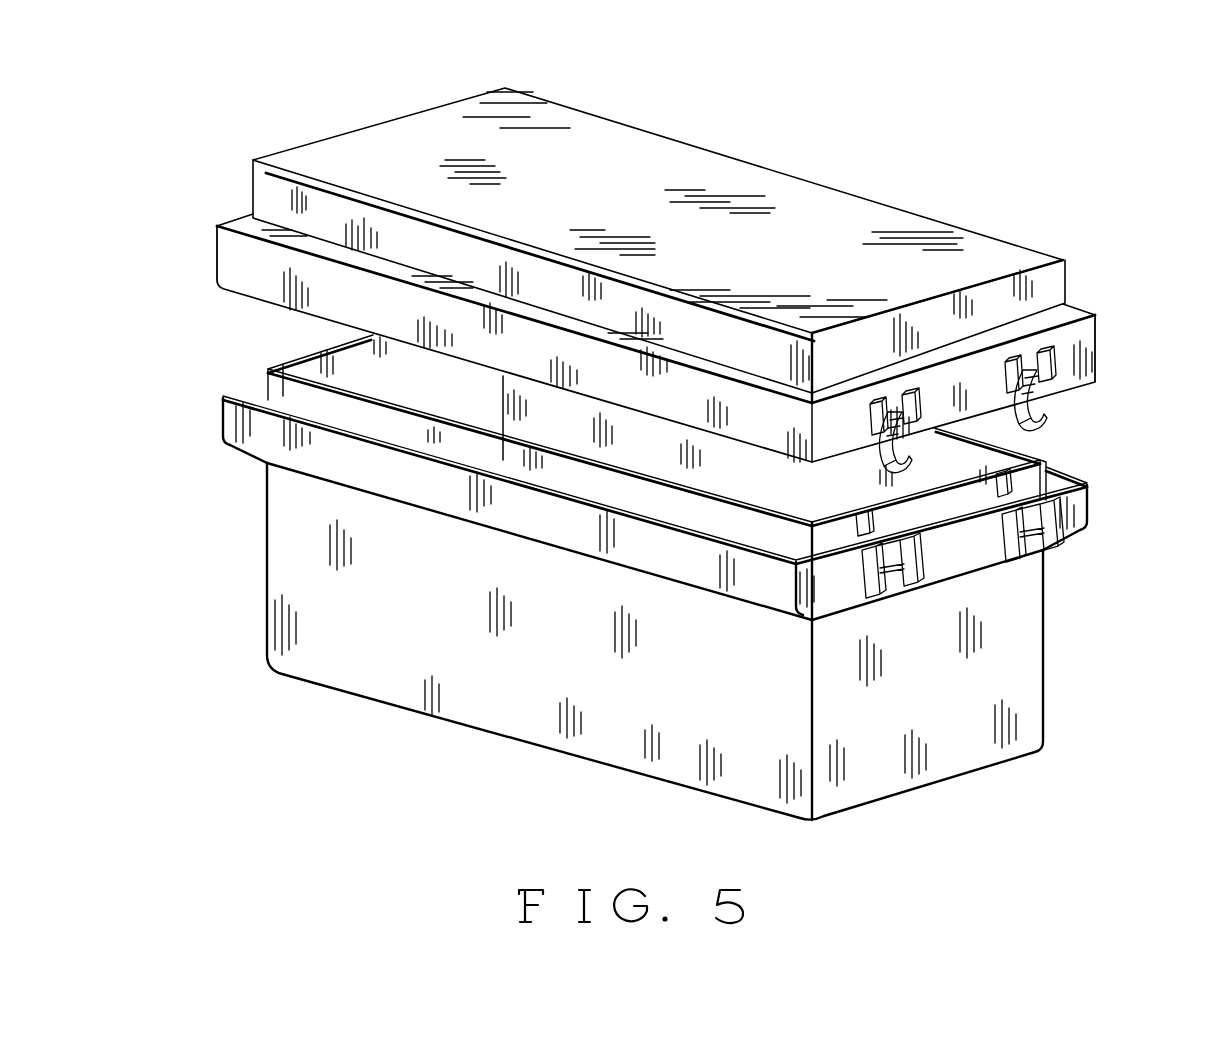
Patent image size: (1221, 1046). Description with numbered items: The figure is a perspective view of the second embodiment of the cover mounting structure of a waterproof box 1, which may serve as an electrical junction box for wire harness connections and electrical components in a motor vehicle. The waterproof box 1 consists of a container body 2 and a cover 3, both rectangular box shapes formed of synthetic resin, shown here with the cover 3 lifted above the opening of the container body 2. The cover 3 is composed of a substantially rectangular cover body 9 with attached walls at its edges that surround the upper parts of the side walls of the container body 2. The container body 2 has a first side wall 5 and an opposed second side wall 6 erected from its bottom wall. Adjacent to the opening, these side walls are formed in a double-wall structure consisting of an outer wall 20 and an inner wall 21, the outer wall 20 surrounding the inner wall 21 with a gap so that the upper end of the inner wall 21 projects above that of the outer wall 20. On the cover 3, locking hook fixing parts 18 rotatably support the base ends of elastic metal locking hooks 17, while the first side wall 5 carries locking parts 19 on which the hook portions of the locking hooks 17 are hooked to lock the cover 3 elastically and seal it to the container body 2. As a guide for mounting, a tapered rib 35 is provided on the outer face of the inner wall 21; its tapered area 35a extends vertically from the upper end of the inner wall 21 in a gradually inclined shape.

The waterproof box 1 is at (806, 135).
The container body 2 is at (332, 685).
The cover 3 is at (655, 129).
The first side wall 5 is at (1027, 683).
The second side wall 6 is at (498, 690).
The cover body 9 is at (845, 212).
The locking hook 17 is at (1058, 400).
The locking hook fixing part 18 is at (1088, 348).
The locking part 19 is at (1058, 548).
The outer wall 20 is at (223, 420).
The inner wall 21 is at (268, 378).
The tapered rib 35 is at (1078, 502).
The tapered area 35a is at (1008, 492).